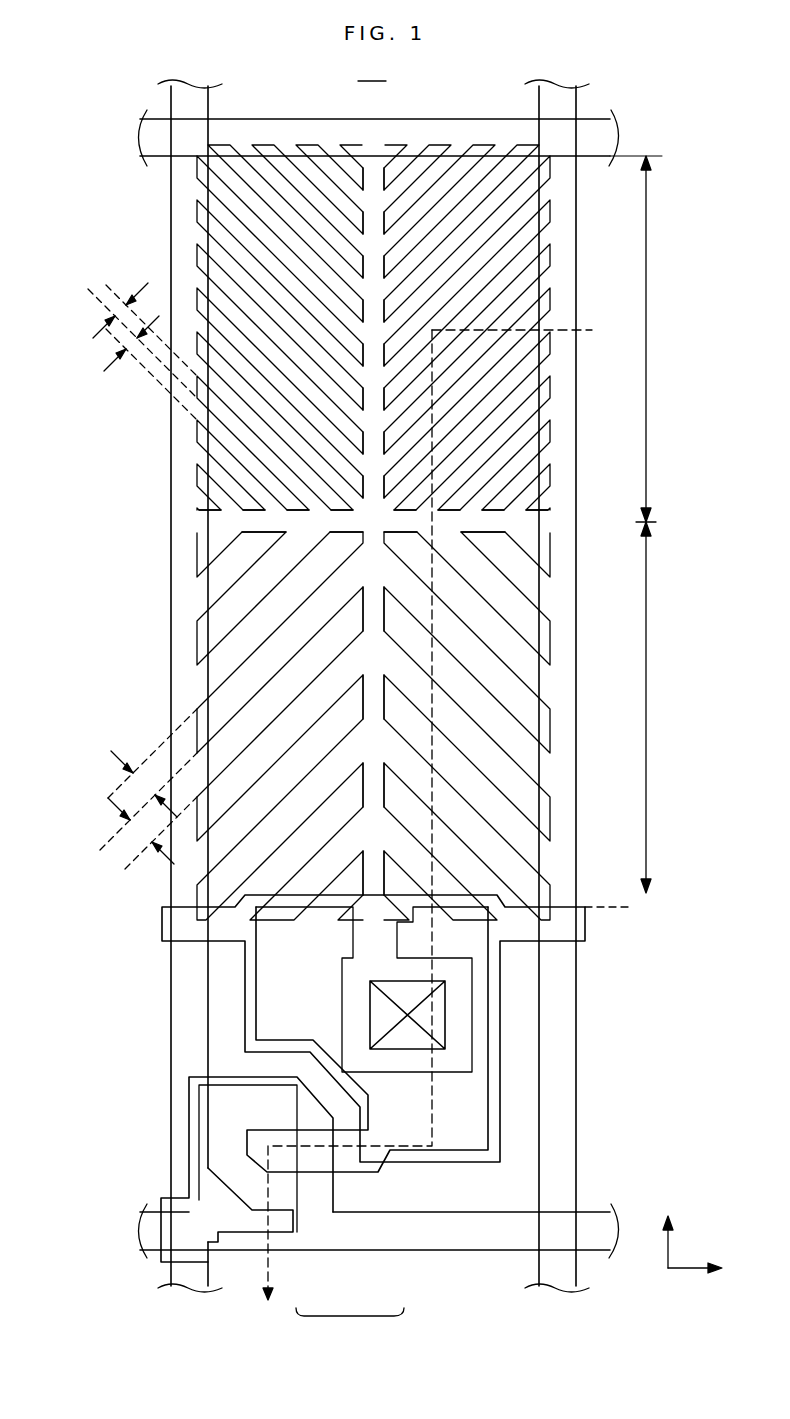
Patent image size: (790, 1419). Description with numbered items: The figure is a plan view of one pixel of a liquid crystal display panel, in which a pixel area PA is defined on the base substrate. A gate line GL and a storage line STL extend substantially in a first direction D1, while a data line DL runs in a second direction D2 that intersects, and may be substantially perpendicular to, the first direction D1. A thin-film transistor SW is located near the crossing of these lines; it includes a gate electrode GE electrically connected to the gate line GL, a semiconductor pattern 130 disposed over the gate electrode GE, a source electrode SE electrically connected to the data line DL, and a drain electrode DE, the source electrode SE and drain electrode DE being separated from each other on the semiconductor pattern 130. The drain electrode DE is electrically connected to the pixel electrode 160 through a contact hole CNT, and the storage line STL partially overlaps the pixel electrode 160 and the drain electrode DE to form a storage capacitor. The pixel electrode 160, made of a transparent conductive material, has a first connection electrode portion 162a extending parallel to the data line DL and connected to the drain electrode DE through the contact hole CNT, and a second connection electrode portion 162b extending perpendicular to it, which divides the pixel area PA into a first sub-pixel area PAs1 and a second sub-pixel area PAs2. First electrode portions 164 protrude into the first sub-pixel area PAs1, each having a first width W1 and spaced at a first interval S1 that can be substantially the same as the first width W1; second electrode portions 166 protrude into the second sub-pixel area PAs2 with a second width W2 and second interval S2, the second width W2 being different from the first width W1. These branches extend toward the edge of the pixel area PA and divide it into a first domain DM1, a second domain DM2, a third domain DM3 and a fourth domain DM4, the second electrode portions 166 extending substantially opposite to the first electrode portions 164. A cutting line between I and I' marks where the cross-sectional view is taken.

The pixel area PA is at (372, 69).
The data line DL is at (190, 1158).
The gate line GL is at (466, 1246).
The pixel electrode 160 is at (54, 425).
The first connection electrode portion 162a is at (375, 482).
The second connection electrode portion 162b is at (222, 519).
The first electrode portions 164 is at (360, 726).
The second electrode portions 166 is at (357, 327).
The first domain DM1 is at (250, 636).
The second domain DM2 is at (490, 638).
The third domain DM3 is at (250, 248).
The fourth domain DM4 is at (485, 255).
The first width W1 is at (124, 804).
The first interval S1 is at (126, 778).
The second width W2 is at (125, 340).
The second interval S2 is at (133, 368).
The section line I is at (347, 831).
The section line I' is at (528, 331).
The first sub-pixel area PAs1 is at (673, 707).
The second sub-pixel area PAs2 is at (670, 339).
The storage line STL is at (588, 926).
The drain electrode DE is at (366, 1174).
The contact hole CNT is at (446, 1006).
The gate electrode GE is at (328, 1192).
The semiconductor pattern 130 is at (308, 1186).
The source electrode SE is at (286, 1242).
The thin-film transistor SW is at (350, 1326).
The first direction D1 is at (714, 1269).
The second direction D2 is at (668, 1226).